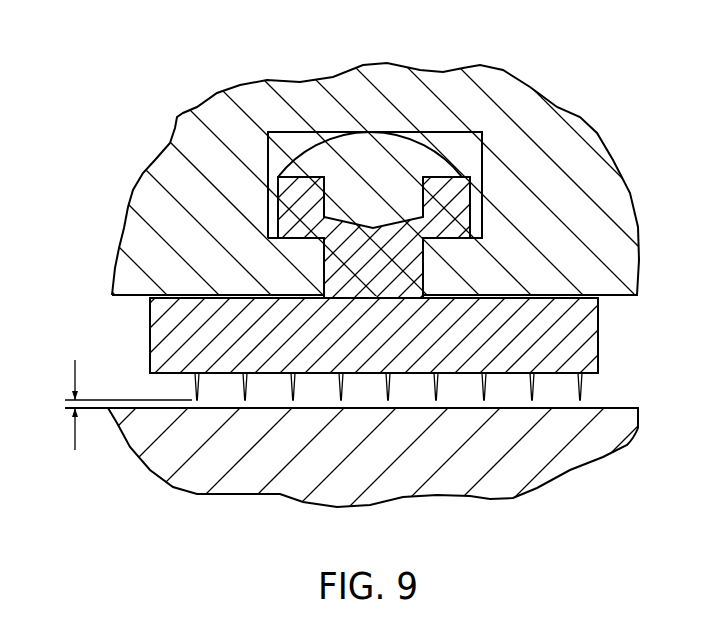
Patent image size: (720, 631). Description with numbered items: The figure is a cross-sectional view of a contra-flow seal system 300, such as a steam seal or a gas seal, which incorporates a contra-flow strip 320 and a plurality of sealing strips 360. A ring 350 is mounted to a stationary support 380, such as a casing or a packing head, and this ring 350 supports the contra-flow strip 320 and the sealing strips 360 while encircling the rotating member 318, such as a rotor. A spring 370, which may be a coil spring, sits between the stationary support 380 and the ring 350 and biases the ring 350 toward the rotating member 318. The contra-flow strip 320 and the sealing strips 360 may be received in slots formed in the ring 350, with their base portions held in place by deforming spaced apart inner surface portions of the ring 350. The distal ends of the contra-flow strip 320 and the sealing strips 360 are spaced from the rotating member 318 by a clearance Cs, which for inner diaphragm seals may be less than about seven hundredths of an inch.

The contra-flow seal system 300 is at (147, 57).
The rotating member 318 is at (580, 458).
The contra-flow strip 320 is at (197, 388).
The ring 350 is at (588, 328).
The sealing strips 360 is at (383, 393).
The spring 370 is at (430, 143).
The stationary support 380 is at (597, 167).